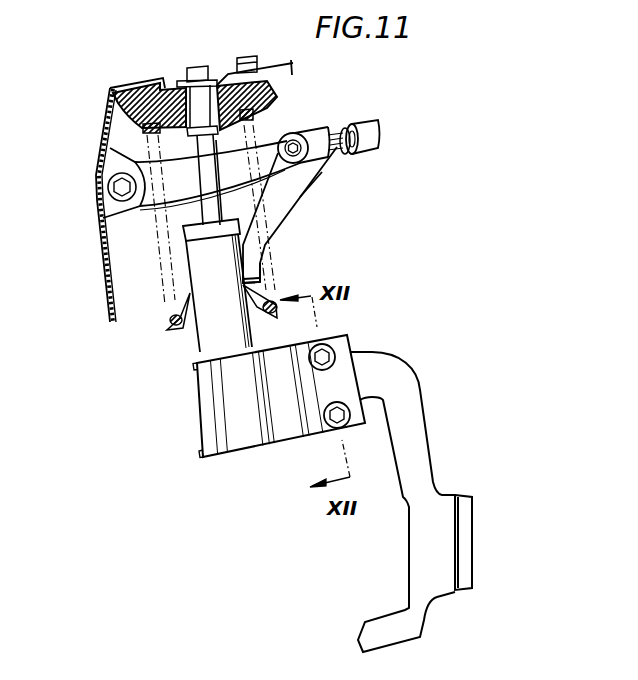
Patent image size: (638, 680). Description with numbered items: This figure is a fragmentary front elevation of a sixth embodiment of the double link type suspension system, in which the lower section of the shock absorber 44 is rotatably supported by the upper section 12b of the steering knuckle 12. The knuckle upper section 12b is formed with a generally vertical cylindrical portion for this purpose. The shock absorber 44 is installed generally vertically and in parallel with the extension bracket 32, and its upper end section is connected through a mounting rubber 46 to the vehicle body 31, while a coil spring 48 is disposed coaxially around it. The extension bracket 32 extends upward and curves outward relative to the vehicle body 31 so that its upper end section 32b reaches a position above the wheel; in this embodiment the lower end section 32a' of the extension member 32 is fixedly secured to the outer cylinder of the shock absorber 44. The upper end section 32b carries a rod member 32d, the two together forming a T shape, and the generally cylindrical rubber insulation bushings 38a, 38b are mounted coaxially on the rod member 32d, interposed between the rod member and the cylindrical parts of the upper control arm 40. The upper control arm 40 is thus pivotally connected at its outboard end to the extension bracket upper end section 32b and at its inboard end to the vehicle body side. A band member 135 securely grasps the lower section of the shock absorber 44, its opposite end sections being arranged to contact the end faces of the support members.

The steering knuckle 12 is at (447, 533).
The knuckle upper section 12b is at (410, 402).
The vehicle body 31 is at (88, 192).
The extension bracket 32 is at (283, 203).
The lower end section of extension member 32a' is at (300, 265).
The upper end section of extension bracket 32b is at (323, 174).
The rod member 32d is at (351, 153).
The rubber insulation bushing 38a is at (378, 122).
The rubber insulation bushing 38b is at (310, 131).
The upper control arm 40 is at (165, 198).
The shock absorber 44 is at (207, 343).
The mounting rubber 46 is at (223, 85).
The coil spring 48 is at (167, 318).
The band member 135 is at (273, 430).